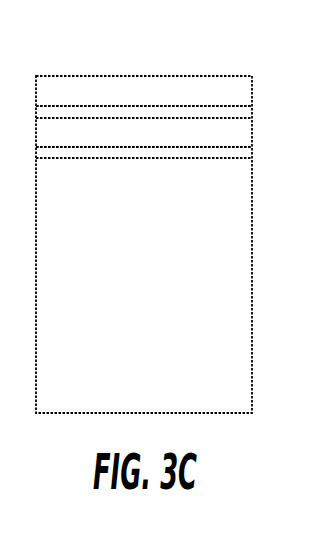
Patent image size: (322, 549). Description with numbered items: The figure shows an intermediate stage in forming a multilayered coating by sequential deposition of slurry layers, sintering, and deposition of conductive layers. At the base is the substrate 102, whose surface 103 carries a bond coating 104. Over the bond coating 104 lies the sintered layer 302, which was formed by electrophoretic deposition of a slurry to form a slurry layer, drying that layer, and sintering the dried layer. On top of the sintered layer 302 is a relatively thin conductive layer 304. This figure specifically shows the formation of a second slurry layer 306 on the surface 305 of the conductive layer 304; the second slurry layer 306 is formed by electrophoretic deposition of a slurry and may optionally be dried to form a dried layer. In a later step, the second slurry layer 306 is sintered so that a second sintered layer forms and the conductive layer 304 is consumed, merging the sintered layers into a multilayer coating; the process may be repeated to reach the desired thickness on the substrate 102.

The substrate 102 is at (162, 284).
The surface of the substrate 103 is at (225, 142).
The bond coating 104 is at (230, 160).
The sintered layer 302 is at (92, 134).
The conductive layer 304 is at (200, 117).
The surface of the conductive layer 305 is at (171, 97).
The second slurry layer 306 is at (118, 100).